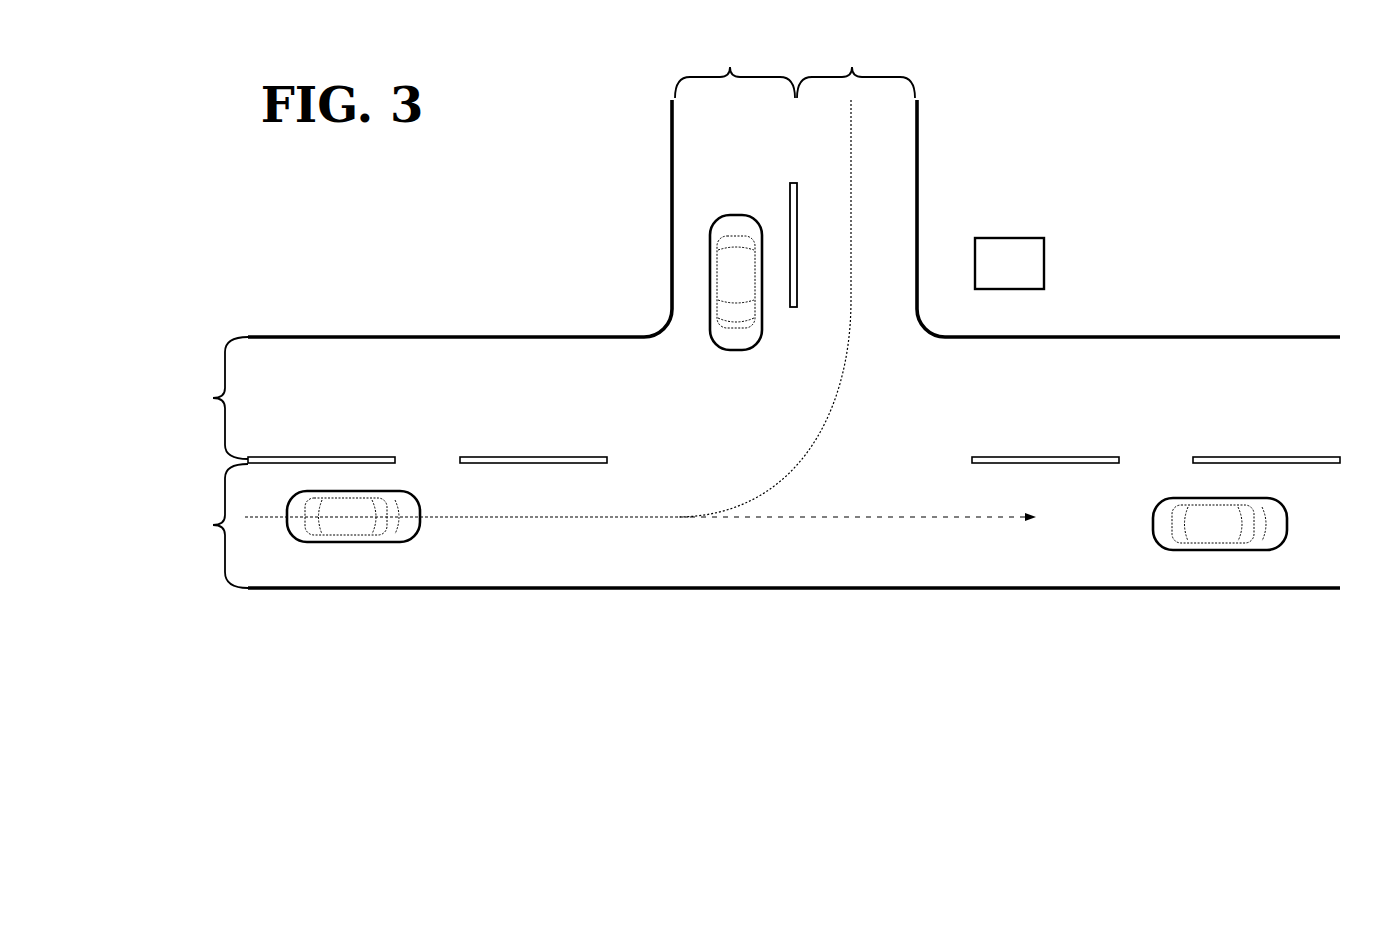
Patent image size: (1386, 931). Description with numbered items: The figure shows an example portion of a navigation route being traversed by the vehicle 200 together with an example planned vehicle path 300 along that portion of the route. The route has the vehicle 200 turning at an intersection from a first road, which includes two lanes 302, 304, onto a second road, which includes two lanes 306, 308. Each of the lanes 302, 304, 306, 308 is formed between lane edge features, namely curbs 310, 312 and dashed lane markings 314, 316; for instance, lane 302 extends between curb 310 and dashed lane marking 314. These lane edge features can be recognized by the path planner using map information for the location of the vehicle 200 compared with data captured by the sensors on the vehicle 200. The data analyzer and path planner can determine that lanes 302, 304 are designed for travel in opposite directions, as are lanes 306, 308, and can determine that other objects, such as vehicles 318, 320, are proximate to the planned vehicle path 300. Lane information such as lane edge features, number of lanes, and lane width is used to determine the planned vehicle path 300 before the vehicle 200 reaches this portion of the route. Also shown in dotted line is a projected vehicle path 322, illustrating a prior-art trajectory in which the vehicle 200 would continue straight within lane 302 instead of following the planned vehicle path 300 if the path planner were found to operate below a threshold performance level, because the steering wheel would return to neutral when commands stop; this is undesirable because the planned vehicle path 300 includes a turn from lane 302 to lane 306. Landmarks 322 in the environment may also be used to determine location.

The vehicle 200 is at (352, 542).
The planned vehicle path 300 is at (852, 262).
The lane 302 is at (208, 526).
The lane 304 is at (208, 398).
The lane 306 is at (856, 65).
The lane 308 is at (735, 65).
The curb 310 is at (465, 590).
The curb 312 is at (476, 336).
The dashed lane marking 314 is at (368, 456).
The dashed lane marking 316 is at (787, 190).
The vehicle 318 is at (1283, 507).
The vehicle 320 is at (710, 266).
The projected vehicle path 322 is at (862, 518).